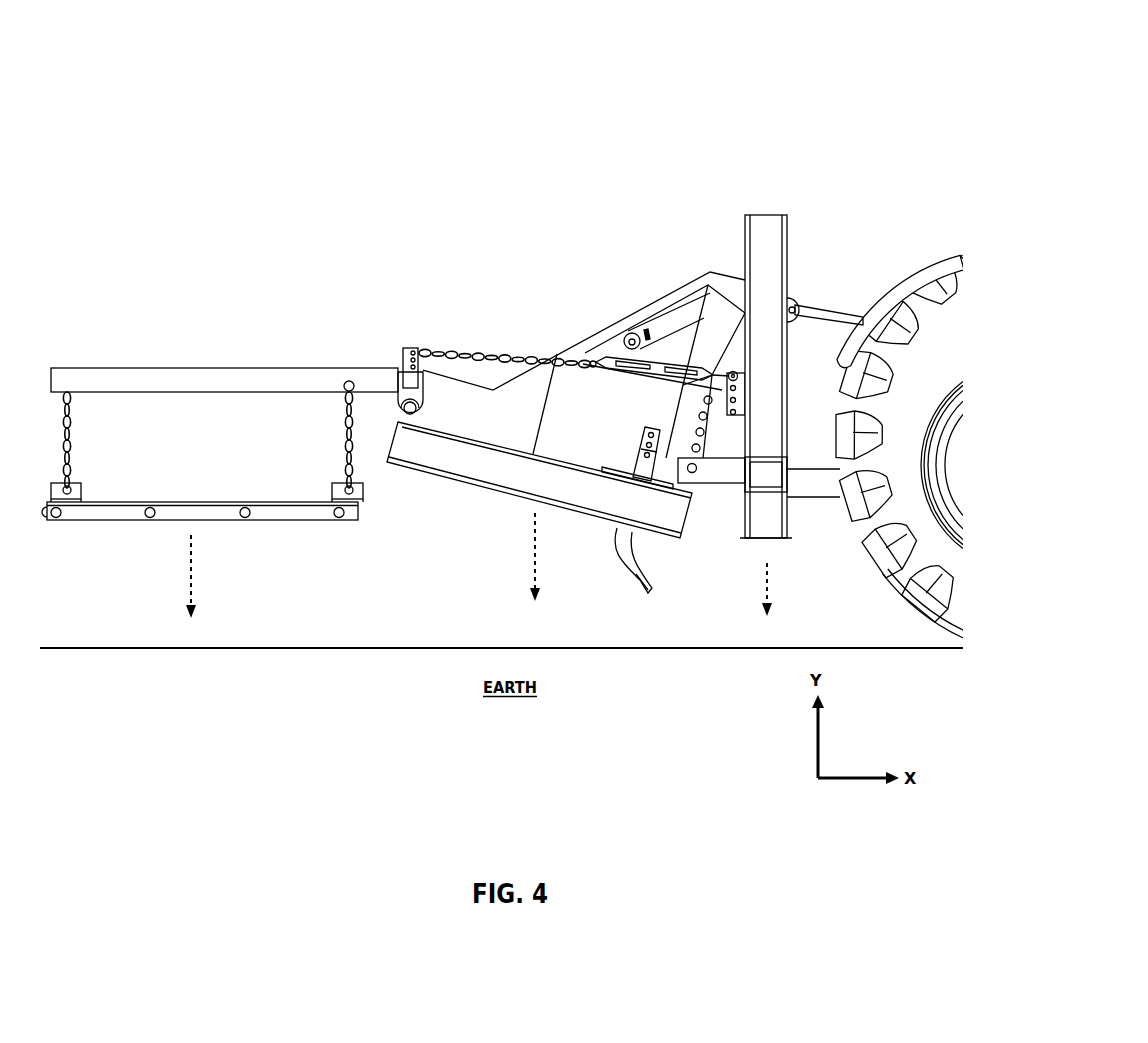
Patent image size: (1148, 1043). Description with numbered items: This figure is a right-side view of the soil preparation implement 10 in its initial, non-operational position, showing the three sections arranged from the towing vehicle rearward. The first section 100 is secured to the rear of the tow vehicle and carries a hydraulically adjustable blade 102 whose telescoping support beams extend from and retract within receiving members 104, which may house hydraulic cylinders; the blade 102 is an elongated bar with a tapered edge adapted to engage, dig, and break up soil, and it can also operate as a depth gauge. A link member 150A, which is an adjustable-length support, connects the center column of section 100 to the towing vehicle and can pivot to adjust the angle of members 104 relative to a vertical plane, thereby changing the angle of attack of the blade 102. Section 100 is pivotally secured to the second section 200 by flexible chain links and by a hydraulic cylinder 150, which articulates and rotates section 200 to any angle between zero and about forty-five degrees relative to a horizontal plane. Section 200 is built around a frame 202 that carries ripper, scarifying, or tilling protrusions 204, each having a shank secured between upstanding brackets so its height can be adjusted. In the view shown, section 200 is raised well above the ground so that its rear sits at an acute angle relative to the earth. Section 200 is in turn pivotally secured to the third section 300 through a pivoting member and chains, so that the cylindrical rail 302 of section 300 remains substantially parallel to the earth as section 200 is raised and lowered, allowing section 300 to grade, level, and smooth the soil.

The implement 10 is at (348, 93).
The section member 300 is at (200, 238).
The rail 302 is at (303, 515).
The section member 200 is at (540, 218).
The frame 202 is at (527, 480).
The protrusion 204 is at (617, 565).
The hydraulic cylinder 150 is at (663, 335).
The link member 150A is at (845, 318).
The section member 100 is at (770, 198).
The receiving member 104 is at (780, 278).
The blade 102 is at (762, 527).